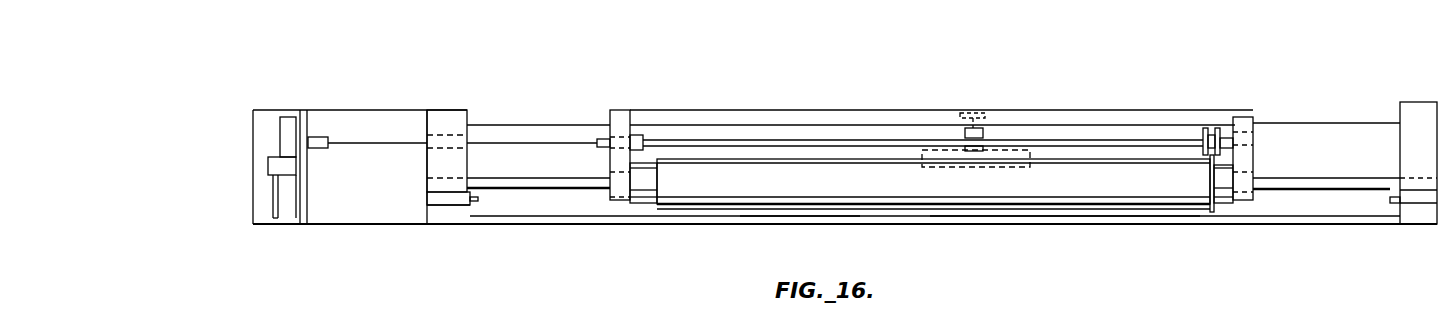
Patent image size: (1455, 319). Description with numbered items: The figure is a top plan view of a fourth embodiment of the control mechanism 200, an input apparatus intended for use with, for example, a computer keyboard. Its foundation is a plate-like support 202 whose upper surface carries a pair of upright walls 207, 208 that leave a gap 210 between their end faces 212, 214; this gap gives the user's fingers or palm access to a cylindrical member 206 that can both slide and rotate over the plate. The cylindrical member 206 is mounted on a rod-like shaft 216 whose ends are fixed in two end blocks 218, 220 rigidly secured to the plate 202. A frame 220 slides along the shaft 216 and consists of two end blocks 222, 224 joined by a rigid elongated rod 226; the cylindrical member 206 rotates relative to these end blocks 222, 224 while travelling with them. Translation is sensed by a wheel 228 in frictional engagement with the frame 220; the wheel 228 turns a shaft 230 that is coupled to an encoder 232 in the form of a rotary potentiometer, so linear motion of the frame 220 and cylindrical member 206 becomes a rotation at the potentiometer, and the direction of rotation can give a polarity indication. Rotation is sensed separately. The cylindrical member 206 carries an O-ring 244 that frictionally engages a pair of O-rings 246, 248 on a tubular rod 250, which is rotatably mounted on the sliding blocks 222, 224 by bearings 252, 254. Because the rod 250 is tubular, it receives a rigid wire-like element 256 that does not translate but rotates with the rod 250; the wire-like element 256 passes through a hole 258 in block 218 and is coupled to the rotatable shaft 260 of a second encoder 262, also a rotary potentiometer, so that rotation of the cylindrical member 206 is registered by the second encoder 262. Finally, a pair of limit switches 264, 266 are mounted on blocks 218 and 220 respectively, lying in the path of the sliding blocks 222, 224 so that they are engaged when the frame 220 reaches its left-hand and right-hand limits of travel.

The control mechanism 200 is at (358, 247).
The plate-like support 202 is at (537, 225).
The cylindrical member 206 is at (713, 190).
The upright wall 207 is at (742, 226).
The upright wall 208 is at (1175, 222).
The gap 210 is at (988, 222).
The end face 212 is at (797, 219).
The end face 214 is at (1070, 218).
The rod-like shaft 216 is at (528, 178).
The end block 218 is at (423, 165).
The end block 220 is at (1253, 123).
The end block 222 is at (617, 125).
The end block 224 is at (1253, 162).
The rigid elongated rod 226 is at (800, 110).
The wheel 228 is at (974, 120).
The shaft 230 is at (965, 128).
The encoder 232 is at (985, 135).
The O-ring 244 is at (1214, 206).
The O-ring 246 is at (1206, 128).
The O-ring 248 is at (1219, 128).
The rod 250 is at (1112, 132).
The bearing 252 is at (634, 140).
The bearing 254 is at (1246, 140).
The rigid wire-like element 256 is at (518, 140).
The hole 258 is at (427, 142).
The rotatable shaft 260 is at (318, 137).
The second encoder 262 is at (303, 112).
The limit switch 264 is at (443, 206).
The limit switch 266 is at (1395, 205).